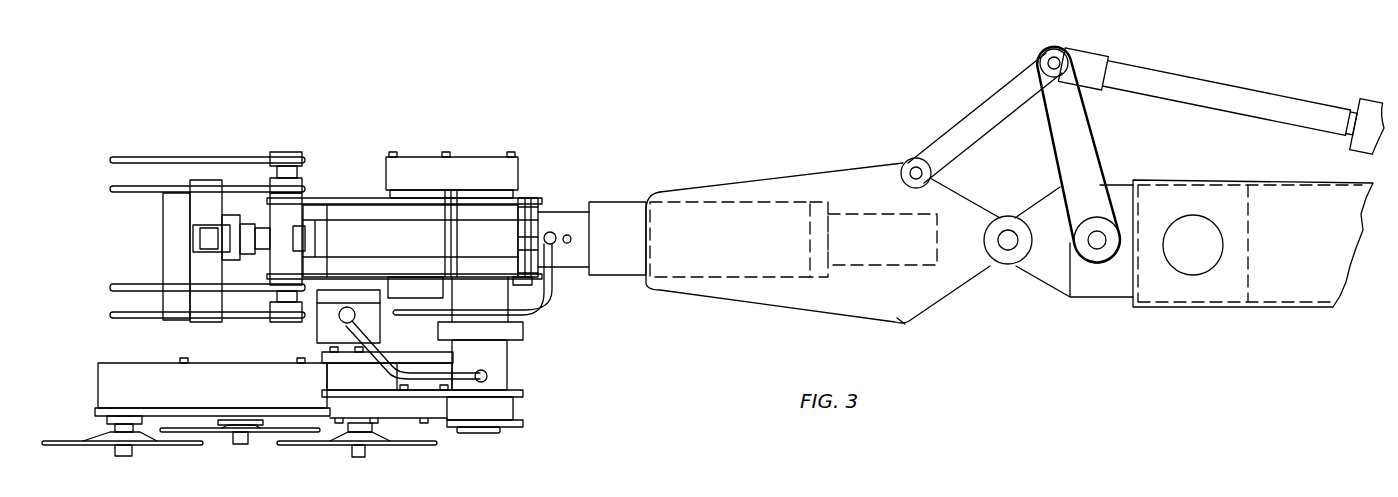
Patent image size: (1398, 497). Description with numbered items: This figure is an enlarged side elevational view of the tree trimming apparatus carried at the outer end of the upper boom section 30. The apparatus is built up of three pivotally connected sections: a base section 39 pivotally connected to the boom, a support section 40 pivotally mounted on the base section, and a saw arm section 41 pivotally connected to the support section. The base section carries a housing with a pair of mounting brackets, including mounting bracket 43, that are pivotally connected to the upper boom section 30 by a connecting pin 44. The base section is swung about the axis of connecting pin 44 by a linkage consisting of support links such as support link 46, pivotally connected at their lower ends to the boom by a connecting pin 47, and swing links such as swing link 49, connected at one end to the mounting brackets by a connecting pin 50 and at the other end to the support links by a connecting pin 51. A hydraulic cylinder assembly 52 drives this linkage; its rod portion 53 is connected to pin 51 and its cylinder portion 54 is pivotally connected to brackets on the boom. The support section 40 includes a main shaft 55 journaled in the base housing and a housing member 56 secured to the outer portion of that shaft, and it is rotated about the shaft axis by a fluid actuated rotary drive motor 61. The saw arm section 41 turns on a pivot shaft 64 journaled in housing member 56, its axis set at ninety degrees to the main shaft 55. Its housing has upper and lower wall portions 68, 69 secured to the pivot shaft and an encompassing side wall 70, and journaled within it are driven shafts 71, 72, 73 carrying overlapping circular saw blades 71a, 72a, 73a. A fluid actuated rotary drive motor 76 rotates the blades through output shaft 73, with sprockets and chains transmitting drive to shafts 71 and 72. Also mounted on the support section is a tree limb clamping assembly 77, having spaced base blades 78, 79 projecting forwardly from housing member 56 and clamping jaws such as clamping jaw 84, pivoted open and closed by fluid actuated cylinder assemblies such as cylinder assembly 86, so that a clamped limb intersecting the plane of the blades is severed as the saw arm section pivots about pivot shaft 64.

The upper boom section 30 is at (1245, 305).
The base section 39 is at (770, 172).
The support section 40 is at (488, 157).
The saw arm section 41 is at (121, 362).
The mounting bracket 43 is at (903, 320).
The connecting pin 44 is at (1008, 246).
The support link 46 is at (1095, 160).
The connecting pin 47 is at (1097, 246).
The swing link 49 is at (975, 118).
The connecting pin 50 is at (915, 168).
The connecting pin 51 is at (1042, 60).
The hydraulic cylinder assembly 52 is at (1295, 108).
The rod portion 53 is at (1188, 92).
The cylinder portion 54 is at (1380, 89).
The main shaft 55 is at (628, 205).
The housing member 56 is at (548, 300).
The rotary drive motor 61 is at (932, 266).
The pivot shaft 64 is at (513, 365).
The upper wall portion 68 is at (523, 393).
The lower wall portion 69 is at (457, 433).
The side wall 70 is at (517, 408).
The driven shaft 71 is at (120, 458).
The circular saw blade 71a is at (80, 447).
The driven shaft 72 is at (240, 448).
The circular saw blade 72a is at (265, 434).
The driven shaft 73 is at (358, 458).
The circular saw blade 73a is at (420, 447).
The rotary drive motor 76 is at (312, 325).
The tree limb clamping assembly 77 is at (312, 168).
The base blade 78 is at (362, 178).
The base blade 79 is at (357, 267).
The clamping jaw 84 is at (222, 158).
The fluid actuated cylinder assembly 86 is at (490, 240).